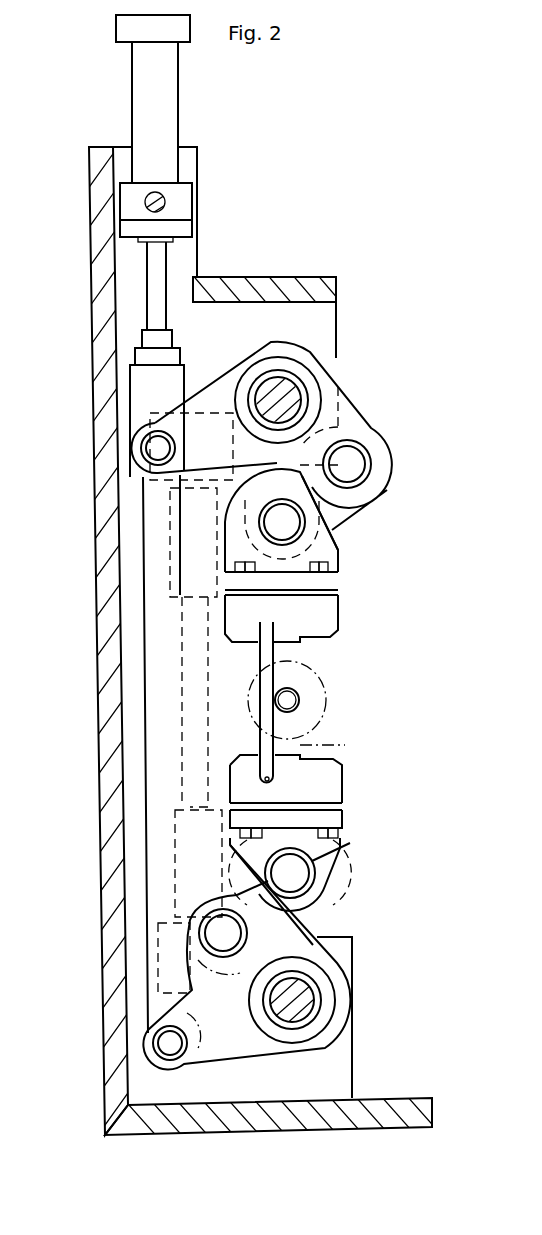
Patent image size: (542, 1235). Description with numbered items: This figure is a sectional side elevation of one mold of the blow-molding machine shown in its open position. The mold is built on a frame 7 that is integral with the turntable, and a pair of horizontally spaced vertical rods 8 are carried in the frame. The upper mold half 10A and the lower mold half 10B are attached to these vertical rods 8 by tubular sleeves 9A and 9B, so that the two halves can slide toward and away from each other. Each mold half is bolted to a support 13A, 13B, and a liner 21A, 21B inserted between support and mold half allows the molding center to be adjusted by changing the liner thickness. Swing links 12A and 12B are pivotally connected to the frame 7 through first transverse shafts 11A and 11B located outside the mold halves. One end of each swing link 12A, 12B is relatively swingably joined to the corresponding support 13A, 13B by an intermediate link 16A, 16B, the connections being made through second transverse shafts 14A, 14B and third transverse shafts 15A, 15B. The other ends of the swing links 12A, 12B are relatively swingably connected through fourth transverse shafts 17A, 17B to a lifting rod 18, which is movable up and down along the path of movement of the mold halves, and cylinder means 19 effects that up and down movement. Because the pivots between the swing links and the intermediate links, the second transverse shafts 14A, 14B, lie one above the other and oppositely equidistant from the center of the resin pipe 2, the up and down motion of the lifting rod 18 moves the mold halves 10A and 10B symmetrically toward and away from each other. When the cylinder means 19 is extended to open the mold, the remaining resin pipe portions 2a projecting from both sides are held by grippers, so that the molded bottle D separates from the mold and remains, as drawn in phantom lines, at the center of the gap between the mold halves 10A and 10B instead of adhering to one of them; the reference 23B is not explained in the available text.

The resin pipe 2 is at (322, 718).
The resin pipe portion 2a is at (295, 702).
The frame 7 is at (105, 577).
The vertical rods 8 is at (190, 727).
The tubular sleeve 9A is at (170, 547).
The tubular sleeve 9B is at (175, 850).
The upper mold half 10A is at (325, 615).
The lower mold half 10B is at (320, 785).
The first transverse shaft 11A is at (286, 388).
The first transverse shaft 11B is at (310, 1003).
The swing link 12A is at (325, 408).
The swing link 12B is at (335, 960).
The support 13A is at (333, 553).
The support 13B is at (330, 850).
The second transverse shaft 14A is at (352, 462).
The second transverse shaft 14B is at (220, 933).
The third transverse shaft 15A is at (287, 522).
The third transverse shaft 15B is at (300, 873).
The intermediate link 16A is at (327, 508).
The intermediate link 16B is at (315, 910).
The fourth transverse shaft 17A is at (150, 447).
The fourth transverse shaft 17B is at (165, 1043).
The lifting rod 18 is at (150, 637).
The cylinder means 19 is at (178, 104).
The liner 21A is at (345, 592).
The liner 21B is at (345, 808).
The lower jaw face 23B is at (345, 745).
The bottle D is at (320, 670).